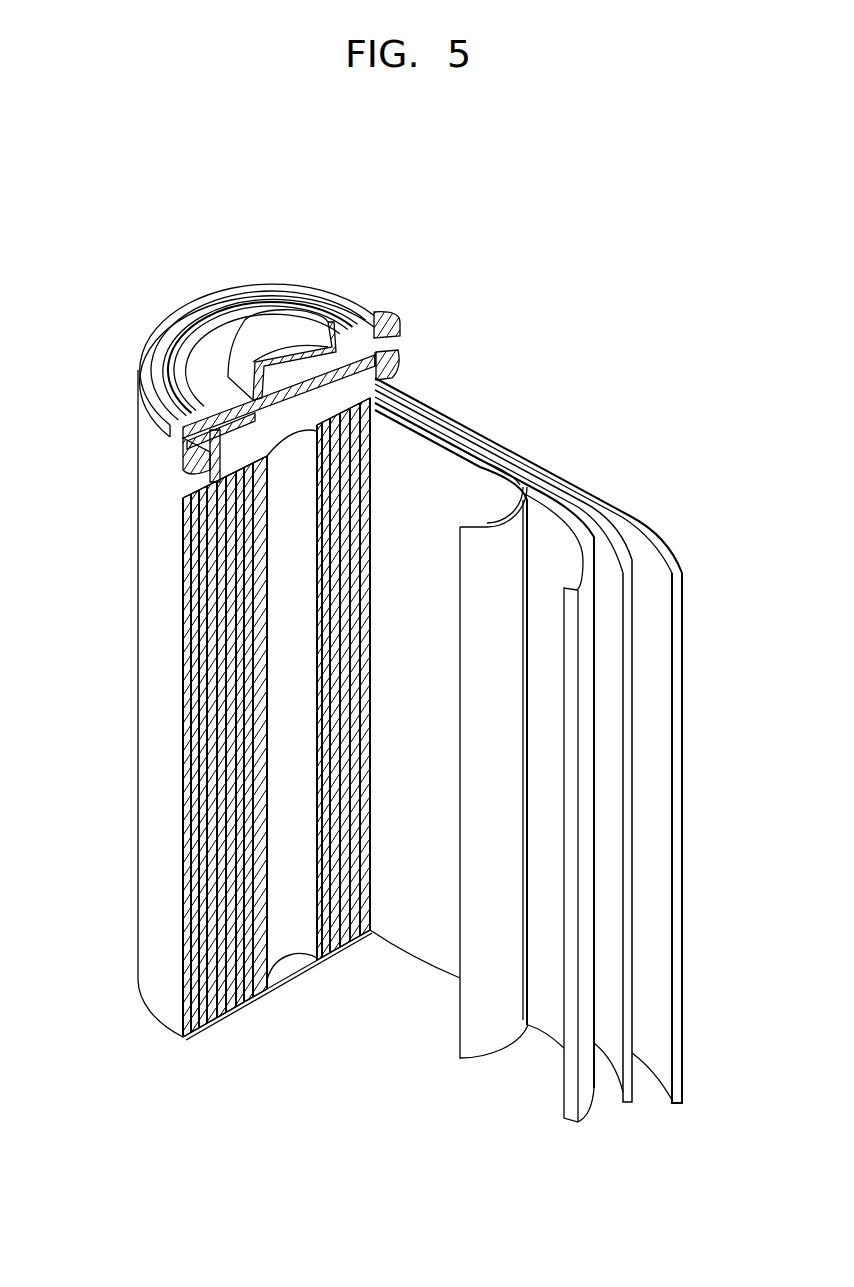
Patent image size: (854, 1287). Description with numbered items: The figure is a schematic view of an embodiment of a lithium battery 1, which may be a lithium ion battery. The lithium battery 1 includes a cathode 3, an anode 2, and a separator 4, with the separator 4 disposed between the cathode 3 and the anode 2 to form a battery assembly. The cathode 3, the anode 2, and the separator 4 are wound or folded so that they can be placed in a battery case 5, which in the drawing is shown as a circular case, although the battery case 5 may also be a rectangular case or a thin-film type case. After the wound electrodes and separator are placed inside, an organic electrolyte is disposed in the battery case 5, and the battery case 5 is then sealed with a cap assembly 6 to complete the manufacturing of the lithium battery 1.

The lithium battery 1 is at (530, 339).
The anode 2 is at (663, 550).
The cathode 3 is at (582, 533).
The separator 4 is at (518, 478).
The battery case 5 is at (145, 707).
The cap assembly 6 is at (262, 330).